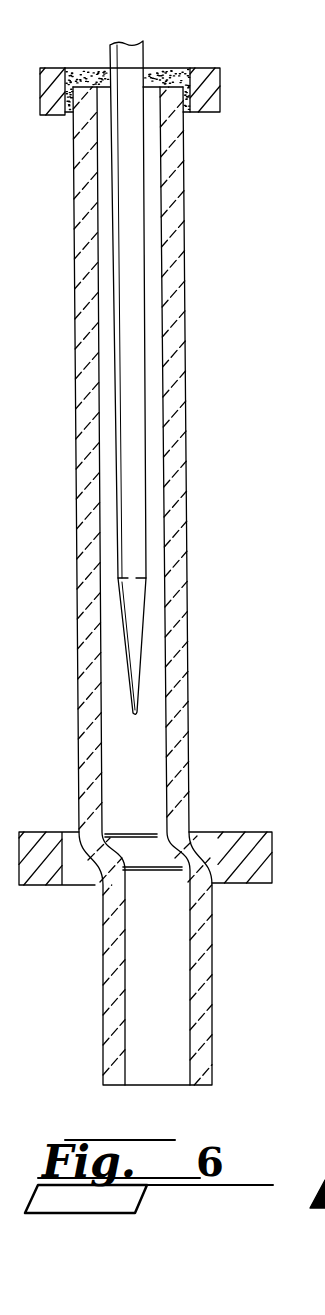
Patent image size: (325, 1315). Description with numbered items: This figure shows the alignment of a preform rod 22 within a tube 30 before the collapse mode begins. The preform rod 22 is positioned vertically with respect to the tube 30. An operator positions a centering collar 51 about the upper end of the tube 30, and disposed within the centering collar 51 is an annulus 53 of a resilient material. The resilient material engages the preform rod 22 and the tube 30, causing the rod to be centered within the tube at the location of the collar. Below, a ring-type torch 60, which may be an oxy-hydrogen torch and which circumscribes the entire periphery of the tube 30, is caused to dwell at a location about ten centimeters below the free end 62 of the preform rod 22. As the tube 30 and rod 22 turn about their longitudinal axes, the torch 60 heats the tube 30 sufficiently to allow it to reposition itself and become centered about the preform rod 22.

The preform rod 22 is at (130, 268).
The tube 30 is at (177, 368).
The centering collar 51 is at (220, 88).
The annulus 53 is at (163, 72).
The ring-type torch 60 is at (255, 832).
The free end 62 is at (142, 650).